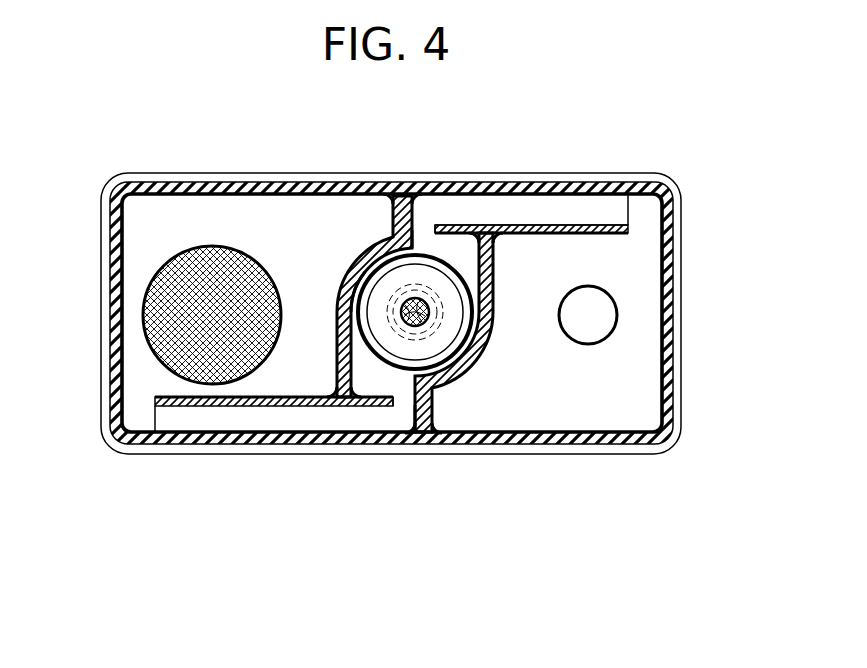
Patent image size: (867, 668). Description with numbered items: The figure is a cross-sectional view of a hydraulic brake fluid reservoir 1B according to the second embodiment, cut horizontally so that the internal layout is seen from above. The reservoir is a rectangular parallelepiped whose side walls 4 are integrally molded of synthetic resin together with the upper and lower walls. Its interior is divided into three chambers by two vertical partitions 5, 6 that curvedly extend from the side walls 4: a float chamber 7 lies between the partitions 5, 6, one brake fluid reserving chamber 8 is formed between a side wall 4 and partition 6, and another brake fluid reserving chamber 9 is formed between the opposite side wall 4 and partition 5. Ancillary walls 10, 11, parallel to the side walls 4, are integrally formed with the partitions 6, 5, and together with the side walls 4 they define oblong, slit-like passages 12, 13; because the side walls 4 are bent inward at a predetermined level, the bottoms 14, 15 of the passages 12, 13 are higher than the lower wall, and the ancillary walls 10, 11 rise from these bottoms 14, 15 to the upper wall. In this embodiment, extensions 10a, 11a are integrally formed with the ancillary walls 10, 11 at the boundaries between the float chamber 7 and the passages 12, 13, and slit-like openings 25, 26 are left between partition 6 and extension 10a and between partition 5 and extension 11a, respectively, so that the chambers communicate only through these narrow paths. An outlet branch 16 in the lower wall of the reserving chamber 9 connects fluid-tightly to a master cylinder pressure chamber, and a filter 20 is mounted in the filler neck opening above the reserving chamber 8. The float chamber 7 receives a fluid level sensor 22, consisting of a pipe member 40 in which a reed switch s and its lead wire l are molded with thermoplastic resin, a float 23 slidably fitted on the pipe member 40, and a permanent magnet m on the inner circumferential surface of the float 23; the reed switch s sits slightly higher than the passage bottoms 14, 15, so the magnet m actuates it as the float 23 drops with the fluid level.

The hydraulic reservoir 1B is at (622, 128).
The side walls 4 is at (241, 186).
The partition 5 is at (466, 368).
The partition 6 is at (363, 252).
The float chamber 7 is at (380, 357).
The brake fluid reserving chamber 8 is at (172, 388).
The brake fluid reserving chamber 9 is at (645, 408).
The ancillary wall 10 is at (543, 226).
The extension 10a is at (455, 226).
The ancillary wall 11 is at (203, 408).
The extension 11a is at (377, 406).
The oblong passage 12 is at (531, 164).
The oblong passage 13 is at (276, 463).
The bottom of oblong passage 14 is at (500, 212).
The bottom of oblong passage 15 is at (172, 423).
The outlet branch 16 is at (608, 306).
The filter 20 is at (167, 302).
The fluid level sensor 22 is at (360, 302).
The float 23 is at (405, 278).
The slit-like opening 25 is at (422, 228).
The slit-like opening 26 is at (408, 400).
The pipe member 40 is at (491, 246).
The lead wire l is at (399, 302).
The reed switch s is at (392, 316).
The permanent magnet m is at (433, 318).